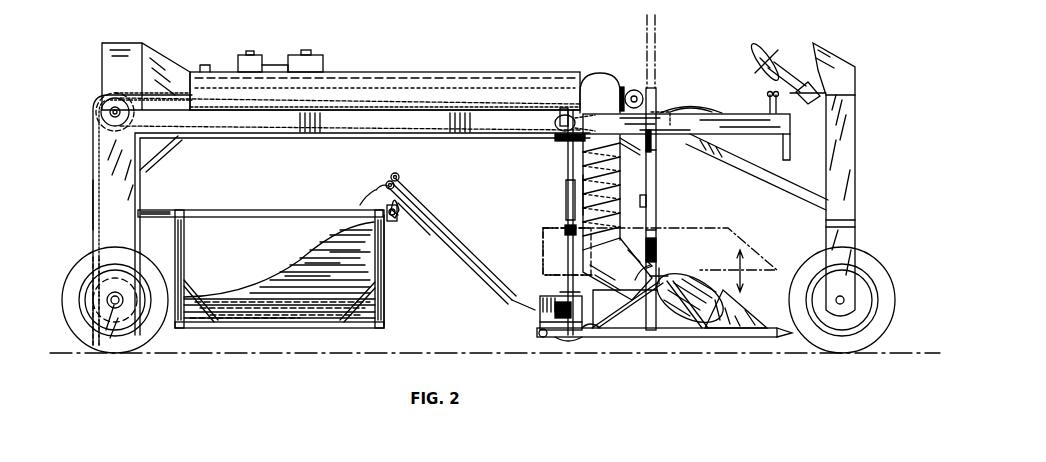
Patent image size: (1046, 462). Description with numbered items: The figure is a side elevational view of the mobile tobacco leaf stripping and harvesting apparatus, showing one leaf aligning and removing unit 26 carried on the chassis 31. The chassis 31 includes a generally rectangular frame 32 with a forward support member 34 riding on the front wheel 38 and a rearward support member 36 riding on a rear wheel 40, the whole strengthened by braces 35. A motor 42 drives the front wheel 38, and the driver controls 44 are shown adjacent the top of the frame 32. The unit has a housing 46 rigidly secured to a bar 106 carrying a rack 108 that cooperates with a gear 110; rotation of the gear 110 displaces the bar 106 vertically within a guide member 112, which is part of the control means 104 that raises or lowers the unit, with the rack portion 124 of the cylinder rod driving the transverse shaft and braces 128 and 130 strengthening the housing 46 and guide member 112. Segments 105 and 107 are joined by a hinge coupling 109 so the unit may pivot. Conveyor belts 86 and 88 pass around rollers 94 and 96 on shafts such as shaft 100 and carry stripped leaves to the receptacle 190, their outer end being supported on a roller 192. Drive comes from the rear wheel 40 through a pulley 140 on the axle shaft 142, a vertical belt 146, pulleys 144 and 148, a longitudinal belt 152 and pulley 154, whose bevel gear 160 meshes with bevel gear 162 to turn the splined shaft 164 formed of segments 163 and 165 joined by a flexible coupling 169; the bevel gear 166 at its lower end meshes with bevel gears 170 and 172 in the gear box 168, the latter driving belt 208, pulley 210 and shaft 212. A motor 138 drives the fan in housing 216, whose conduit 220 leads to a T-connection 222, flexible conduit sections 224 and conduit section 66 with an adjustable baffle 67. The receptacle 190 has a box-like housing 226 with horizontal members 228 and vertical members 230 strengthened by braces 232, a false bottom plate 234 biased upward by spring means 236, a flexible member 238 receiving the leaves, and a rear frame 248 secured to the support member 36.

The leaf aligning and removing unit 26 is at (742, 302).
The chassis 31 is at (742, 110).
The frame 32 is at (400, 112).
The forward support member 34 is at (848, 180).
The brace 35 is at (160, 150).
The rearward support member 36 is at (108, 166).
The front wheel 38 is at (874, 272).
The rear wheel 40 is at (98, 340).
The motor 42 is at (835, 60).
The controls 44 is at (793, 72).
The housing 46 is at (750, 320).
The conduit section 66 is at (700, 306).
The adjustable baffle 67 is at (660, 290).
The conveyor belt 86 is at (450, 262).
The conveyor belt 88 is at (440, 222).
The roller 94 is at (376, 188).
The roller 96 is at (400, 180).
The shaft 100 is at (393, 180).
The control means 104 is at (626, 78).
The segment 105 is at (657, 170).
The bar 106 is at (658, 214).
The segment 107 is at (655, 262).
The rack 108 is at (650, 204).
The hinge coupling 109 is at (662, 238).
The gear 110 is at (643, 96).
The guide member 112 is at (657, 145).
The rack portion 124 is at (690, 104).
The brace 128 is at (628, 312).
The brace 130 is at (610, 200).
The motor 138 is at (270, 68).
The pulley 140 is at (114, 312).
The axle shaft 142 is at (128, 304).
The pulley 144 is at (98, 112).
The belt 146 is at (92, 192).
The pulley 148 is at (102, 96).
The belt 152 is at (330, 108).
The pulley 154 is at (558, 123).
The bevel gear 160 is at (560, 108).
The bevel gear 162 is at (562, 142).
The shaft segment 163 is at (567, 226).
The splined shaft 164 is at (566, 200).
The shaft segment 165 is at (548, 256).
The bevel gear 166 is at (558, 302).
The gear box 168 is at (556, 292).
The flexible coupling 169 is at (560, 233).
The bevel gear 170 is at (556, 312).
The bevel gear 172 is at (548, 326).
The receptacle 190 is at (240, 205).
The roller 192 is at (396, 222).
The belt 208 is at (548, 338).
The pulley 210 is at (568, 337).
The shaft 212 is at (590, 338).
The fan housing 216 is at (155, 52).
The conduit 220 is at (460, 80).
The T-connection 222 is at (600, 80).
The flexible conduit section 224 is at (585, 195).
The housing 226 is at (387, 291).
The horizontal member 228 is at (278, 210).
The vertical member 230 is at (186, 225).
The brace 232 is at (200, 300).
The false bottom plate 234 is at (230, 300).
The spring means 236 is at (250, 306).
The flexible member 238 is at (265, 276).
The frame 248 is at (148, 208).